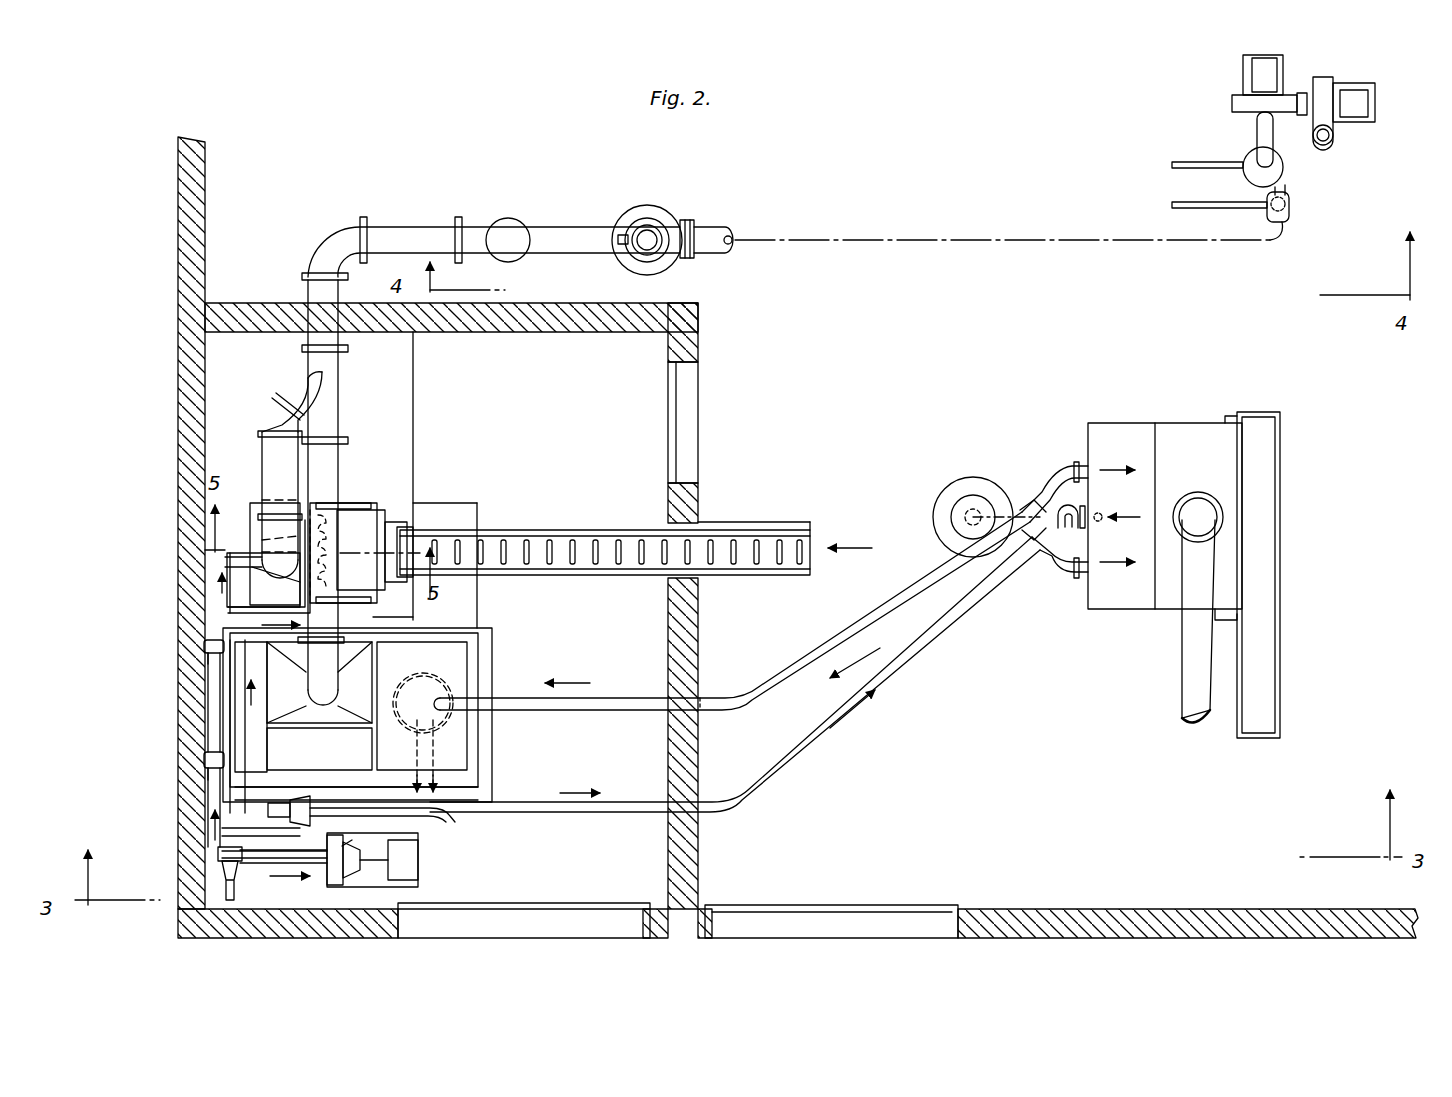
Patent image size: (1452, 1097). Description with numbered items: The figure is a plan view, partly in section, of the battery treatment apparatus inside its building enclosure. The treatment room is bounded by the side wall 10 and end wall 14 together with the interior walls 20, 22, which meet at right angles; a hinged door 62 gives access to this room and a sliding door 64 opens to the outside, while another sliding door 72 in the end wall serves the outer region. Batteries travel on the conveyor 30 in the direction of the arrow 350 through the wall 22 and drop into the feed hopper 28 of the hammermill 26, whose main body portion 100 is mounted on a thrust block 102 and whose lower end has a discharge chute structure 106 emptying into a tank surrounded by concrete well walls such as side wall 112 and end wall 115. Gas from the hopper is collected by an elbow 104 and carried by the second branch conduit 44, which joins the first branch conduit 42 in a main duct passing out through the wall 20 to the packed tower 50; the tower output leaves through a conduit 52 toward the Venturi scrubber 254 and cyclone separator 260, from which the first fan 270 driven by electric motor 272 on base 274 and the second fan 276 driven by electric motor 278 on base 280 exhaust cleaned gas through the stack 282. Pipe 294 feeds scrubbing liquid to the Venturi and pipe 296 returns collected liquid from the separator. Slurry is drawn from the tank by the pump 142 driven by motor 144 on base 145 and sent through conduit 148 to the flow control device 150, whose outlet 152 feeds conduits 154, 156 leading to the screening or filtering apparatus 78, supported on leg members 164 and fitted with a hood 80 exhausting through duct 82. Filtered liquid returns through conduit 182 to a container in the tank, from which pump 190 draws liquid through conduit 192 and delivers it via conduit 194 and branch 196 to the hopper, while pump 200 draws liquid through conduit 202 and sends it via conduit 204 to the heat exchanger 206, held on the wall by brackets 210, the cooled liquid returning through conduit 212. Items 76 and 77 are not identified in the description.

The side wall 10 is at (178, 433).
The end wall 14 is at (1122, 909).
The interior wall 20 is at (518, 335).
The interior wall 22 is at (668, 622).
The hammermill 26 is at (254, 500).
The feed hopper 28 is at (358, 510).
The conveyor 30 is at (596, 530).
The first branch conduit 42 is at (338, 455).
The second branch conduit 44 is at (272, 416).
The packed tower 50 is at (630, 213).
The conduit 52 is at (718, 231).
The hinged door 62 is at (680, 394).
The sliding door 64 is at (562, 903).
The sliding door 72 is at (863, 905).
The pipe 76 is at (428, 223).
The plate 77 is at (1262, 440).
The screening or filtering apparatus 78 is at (1136, 422).
The hood 80 is at (1210, 423).
The duct 82 is at (1192, 662).
The main body portion 100 is at (366, 494).
The thrust block 102 is at (413, 445).
The elbow 104 is at (262, 540).
The discharge chute structure 106 is at (380, 614).
The side wall 112 is at (458, 794).
The end wall 115 is at (493, 746).
The pump 142 is at (330, 884).
The motor 144 is at (418, 864).
The base 145 is at (388, 880).
The conduit 148 is at (590, 812).
The flow control device 150 is at (948, 484).
The outlet 152 is at (1016, 503).
The conduit 154 is at (1050, 560).
The conduit 156 is at (1058, 500).
The leg members 164 is at (440, 666).
The conduit 182 is at (588, 708).
The pump 190 is at (305, 800).
The conduit 192 is at (438, 834).
The conduit 194 is at (228, 563).
The branch 196 is at (226, 603).
The pump 200 is at (218, 877).
The conduit 202 is at (440, 820).
The conduit 204 is at (222, 830).
The heat exchanger 206 is at (208, 692).
The brackets 210 is at (204, 646).
The conduit 212 is at (207, 666).
The Venturi scrubber 254 is at (1293, 206).
The cyclone separator 260 is at (1290, 174).
The first fan 270 is at (1232, 104).
The electric motor 272 is at (1257, 68).
The base 274 is at (1243, 80).
The second fan 276 is at (1331, 78).
The electric motor 278 is at (1366, 100).
The base 280 is at (1373, 120).
The stack 282 is at (1359, 144).
The pipe 294 is at (1192, 202).
The pipe 296 is at (1211, 164).
The arrow 350 is at (872, 549).